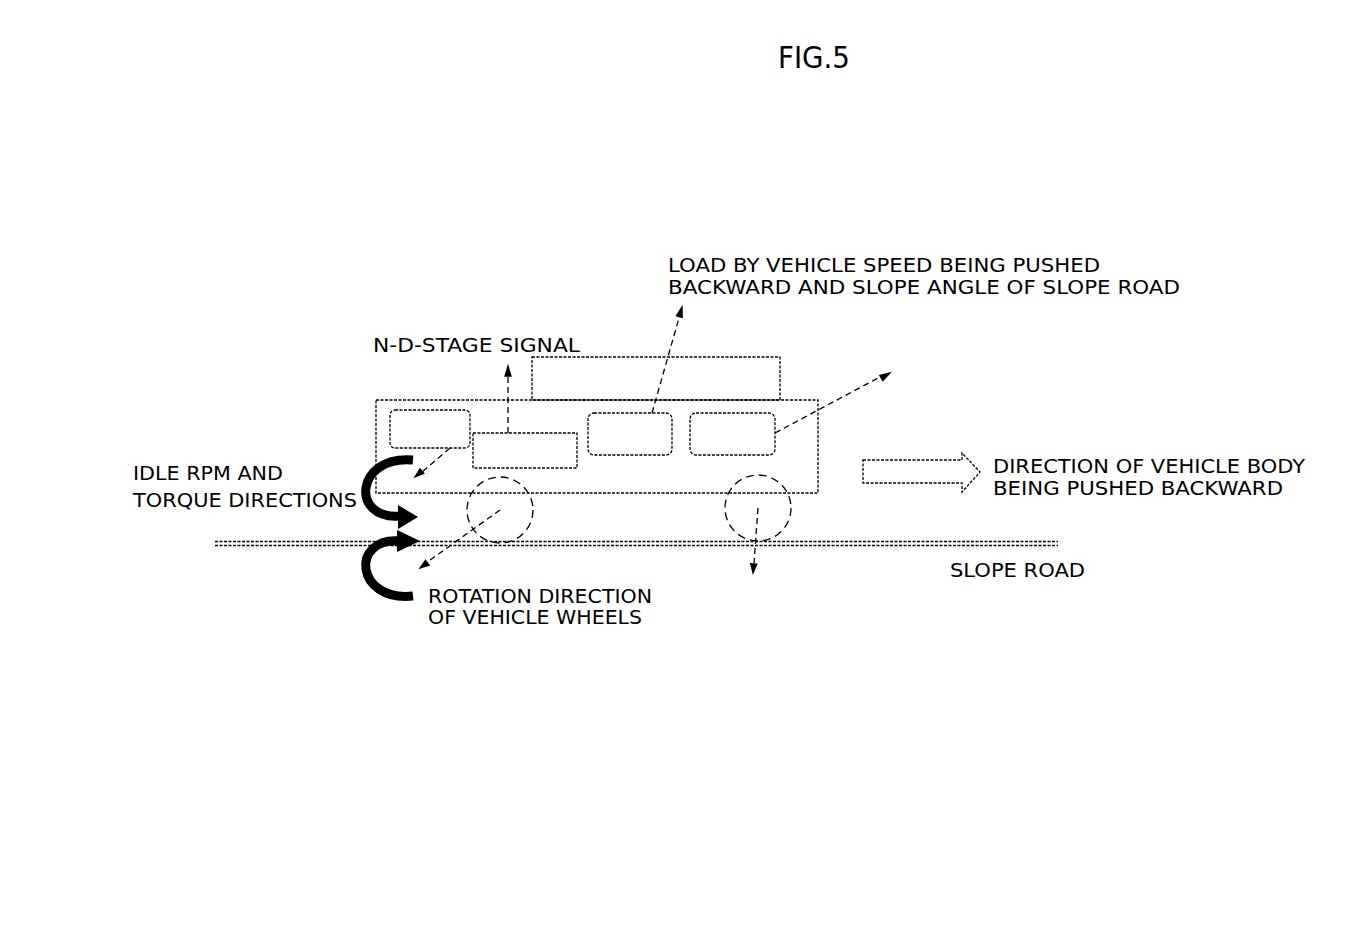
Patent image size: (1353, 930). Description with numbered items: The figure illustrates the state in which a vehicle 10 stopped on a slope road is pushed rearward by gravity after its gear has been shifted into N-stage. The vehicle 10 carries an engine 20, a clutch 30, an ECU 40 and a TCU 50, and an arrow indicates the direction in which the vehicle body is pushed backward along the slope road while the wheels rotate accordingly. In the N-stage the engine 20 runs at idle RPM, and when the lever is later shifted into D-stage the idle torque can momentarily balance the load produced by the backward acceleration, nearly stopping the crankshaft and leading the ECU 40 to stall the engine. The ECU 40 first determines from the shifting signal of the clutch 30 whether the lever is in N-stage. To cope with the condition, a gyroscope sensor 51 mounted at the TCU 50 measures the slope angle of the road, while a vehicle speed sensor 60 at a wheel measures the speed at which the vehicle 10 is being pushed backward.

The vehicle 10 is at (377, 447).
The engine 20 is at (390, 410).
The clutch 30 is at (495, 433).
The ECU (Engine Control Unit) 40 is at (628, 413).
The TCU (Transmission Control Unit) 50 is at (732, 412).
The gyroscope sensor 51 is at (1068, 397).
The vehicle speed sensor 60 is at (748, 610).